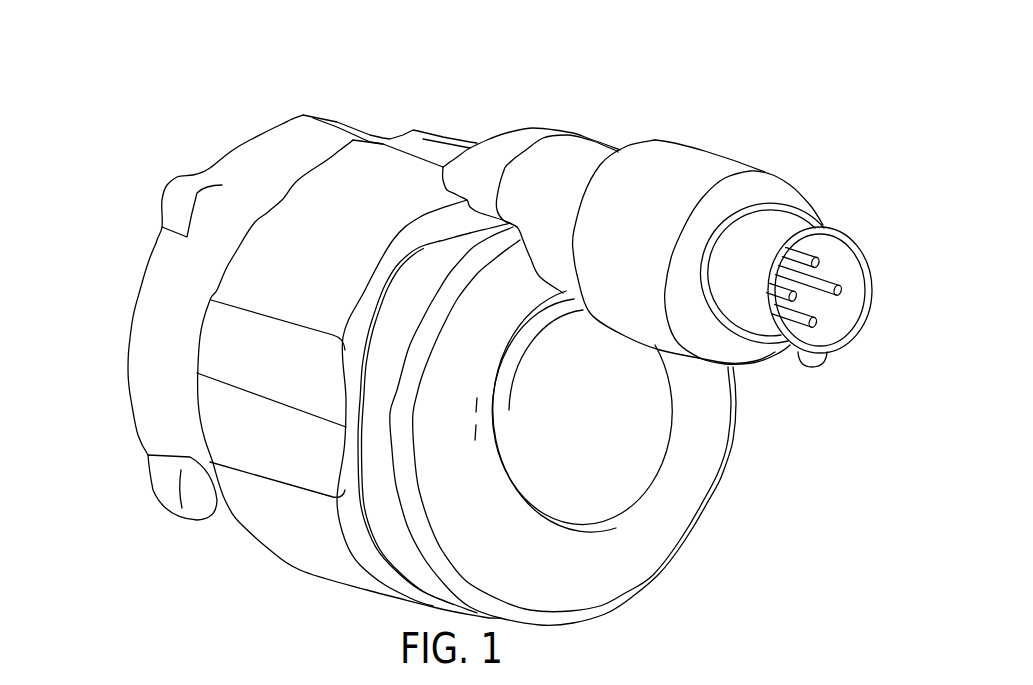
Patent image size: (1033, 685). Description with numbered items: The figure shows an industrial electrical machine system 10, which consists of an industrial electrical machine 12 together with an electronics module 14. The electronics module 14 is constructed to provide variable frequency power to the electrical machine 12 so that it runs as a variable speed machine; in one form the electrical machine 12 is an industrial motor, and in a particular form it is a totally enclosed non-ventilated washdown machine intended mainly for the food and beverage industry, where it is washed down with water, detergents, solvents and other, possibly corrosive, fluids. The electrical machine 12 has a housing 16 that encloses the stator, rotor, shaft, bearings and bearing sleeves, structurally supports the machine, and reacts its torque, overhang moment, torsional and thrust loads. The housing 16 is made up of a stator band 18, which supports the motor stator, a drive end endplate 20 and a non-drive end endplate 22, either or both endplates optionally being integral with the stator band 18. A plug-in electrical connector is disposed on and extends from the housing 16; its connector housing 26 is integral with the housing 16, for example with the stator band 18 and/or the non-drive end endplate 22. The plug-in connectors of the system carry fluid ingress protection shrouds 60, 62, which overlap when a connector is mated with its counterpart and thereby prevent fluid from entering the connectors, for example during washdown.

The industrial electrical machine system 10 is at (797, 45).
The industrial electrical machine 12 is at (484, 64).
The electronics module 14 is at (742, 130).
The housing 16 is at (253, 603).
The stator band 18 is at (300, 568).
The drive end endplate 20 is at (143, 440).
The non-drive end endplate 22 is at (644, 585).
The connector housing 26 is at (533, 128).
The fluid ingress protection shroud 60 is at (614, 150).
The fluid ingress protection shroud 62 is at (857, 240).